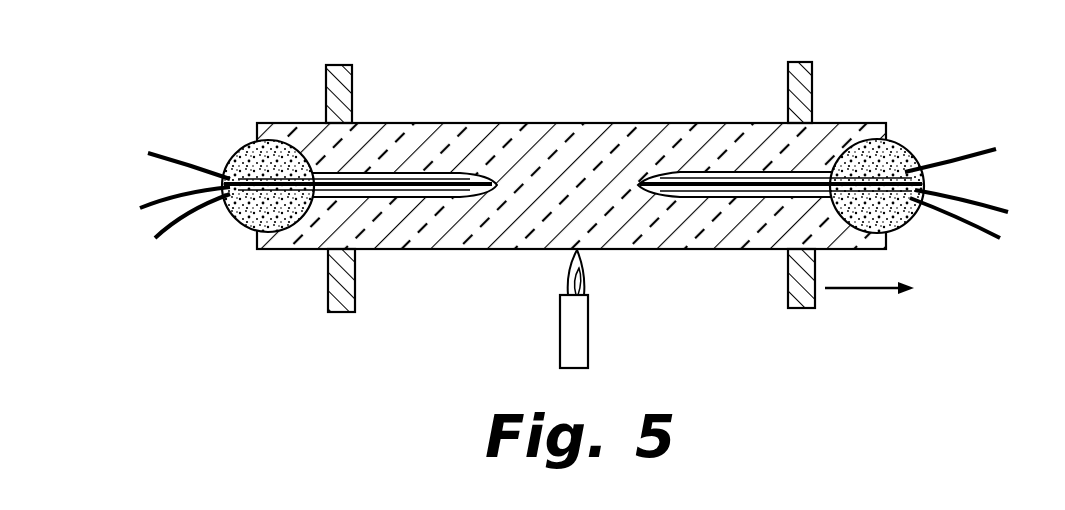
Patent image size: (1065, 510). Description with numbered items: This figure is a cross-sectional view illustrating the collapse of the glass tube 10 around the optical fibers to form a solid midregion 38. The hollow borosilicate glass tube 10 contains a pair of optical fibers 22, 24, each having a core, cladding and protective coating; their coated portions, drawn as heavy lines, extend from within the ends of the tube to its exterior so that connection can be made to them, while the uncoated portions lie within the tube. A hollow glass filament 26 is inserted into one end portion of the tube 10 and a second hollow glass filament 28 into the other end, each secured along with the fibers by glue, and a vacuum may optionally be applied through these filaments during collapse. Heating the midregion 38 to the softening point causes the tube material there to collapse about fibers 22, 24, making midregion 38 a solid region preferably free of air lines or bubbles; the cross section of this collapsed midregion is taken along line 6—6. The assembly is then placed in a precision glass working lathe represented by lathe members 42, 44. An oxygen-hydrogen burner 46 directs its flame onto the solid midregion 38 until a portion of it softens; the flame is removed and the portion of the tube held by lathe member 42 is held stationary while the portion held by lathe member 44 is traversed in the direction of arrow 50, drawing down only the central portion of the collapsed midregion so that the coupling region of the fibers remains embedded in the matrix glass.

The glass tube 10 is at (439, 116).
The section line 6— 6 is at (597, 70).
The optical fiber 22 is at (175, 165).
The optical fiber 24 is at (155, 205).
The hollow glass filament 26 is at (170, 232).
The second hollow glass filament 28 is at (985, 236).
The midregion 38 is at (635, 120).
The glass working lathe member 42 is at (338, 64).
The glass working lathe member 44 is at (797, 61).
The oxygen-hydrogen burner 46 is at (548, 332).
The arrow 50 is at (857, 288).